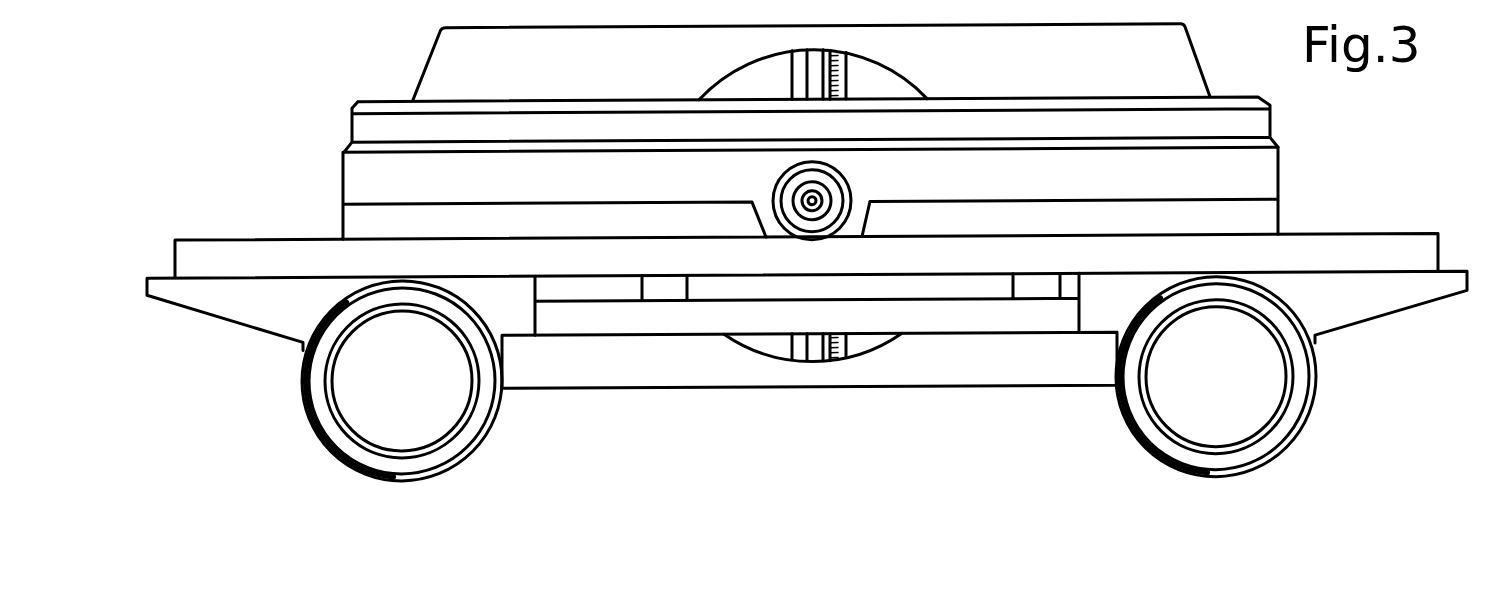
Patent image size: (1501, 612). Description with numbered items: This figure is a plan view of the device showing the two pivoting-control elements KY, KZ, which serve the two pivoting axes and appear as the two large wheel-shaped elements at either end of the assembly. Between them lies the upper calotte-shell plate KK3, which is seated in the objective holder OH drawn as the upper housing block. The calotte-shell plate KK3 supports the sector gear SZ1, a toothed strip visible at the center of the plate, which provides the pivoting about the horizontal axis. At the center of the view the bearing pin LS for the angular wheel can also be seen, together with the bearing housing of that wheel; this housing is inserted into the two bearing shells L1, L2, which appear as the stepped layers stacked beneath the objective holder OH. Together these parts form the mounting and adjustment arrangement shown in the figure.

The objective holder OH is at (440, 74).
The bearing shell L2 is at (370, 135).
The bearing shell L1 is at (358, 224).
The pivoting-control element KY is at (332, 437).
The pivoting-control element KZ is at (1280, 435).
The upper calotte-shell plate KK3 is at (763, 342).
The bearing pin LS is at (810, 214).
The sector gear SZ1 is at (840, 82).